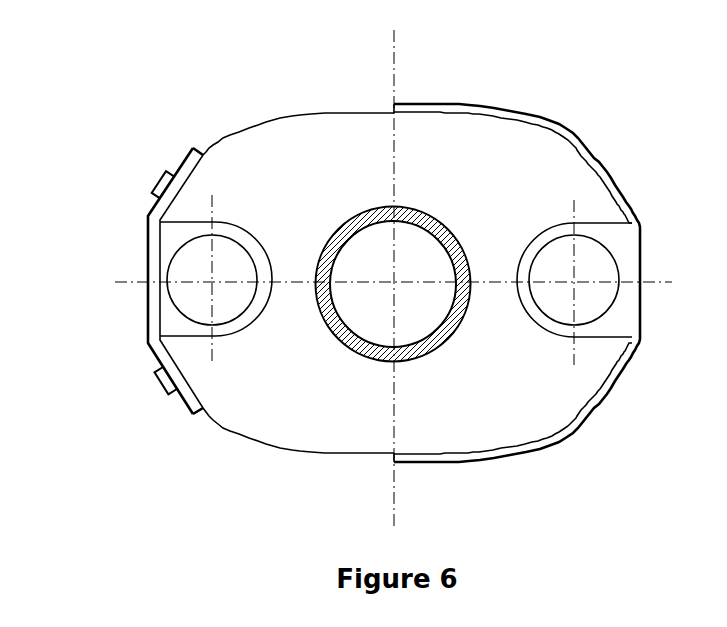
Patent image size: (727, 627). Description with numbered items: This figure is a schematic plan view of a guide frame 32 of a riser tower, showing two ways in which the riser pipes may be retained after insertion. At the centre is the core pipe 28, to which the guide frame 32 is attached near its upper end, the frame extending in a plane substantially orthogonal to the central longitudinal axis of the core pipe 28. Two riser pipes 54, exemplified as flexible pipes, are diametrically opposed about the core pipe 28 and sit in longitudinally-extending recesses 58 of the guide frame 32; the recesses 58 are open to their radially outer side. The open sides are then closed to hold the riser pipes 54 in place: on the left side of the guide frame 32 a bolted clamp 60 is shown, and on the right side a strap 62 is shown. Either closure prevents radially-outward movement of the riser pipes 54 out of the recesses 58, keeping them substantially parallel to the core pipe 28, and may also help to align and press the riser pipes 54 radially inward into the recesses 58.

The core pipe 28 is at (383, 205).
The guide frame 32 is at (275, 142).
The riser pipes 54 is at (230, 253).
The recesses 58 is at (218, 337).
The clamp 60 is at (152, 222).
The strap 62 is at (549, 118).